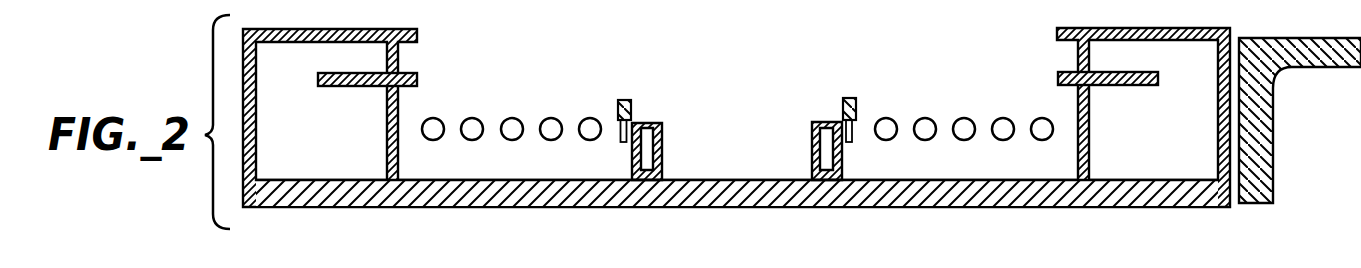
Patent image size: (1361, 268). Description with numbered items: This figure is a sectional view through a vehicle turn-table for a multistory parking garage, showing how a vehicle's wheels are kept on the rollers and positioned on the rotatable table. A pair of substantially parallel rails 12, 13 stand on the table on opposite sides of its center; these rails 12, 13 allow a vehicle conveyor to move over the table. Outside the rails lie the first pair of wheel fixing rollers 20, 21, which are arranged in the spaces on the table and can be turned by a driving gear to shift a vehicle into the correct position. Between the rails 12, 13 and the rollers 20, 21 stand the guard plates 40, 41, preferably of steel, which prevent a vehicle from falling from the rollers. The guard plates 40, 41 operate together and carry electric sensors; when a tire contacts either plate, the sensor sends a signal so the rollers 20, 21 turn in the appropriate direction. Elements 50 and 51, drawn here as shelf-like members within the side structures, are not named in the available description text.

The rail 12 is at (812, 126).
The rail 13 is at (662, 128).
The wheel fixing roller 20 is at (925, 107).
The wheel fixing roller 21 is at (551, 107).
The guard plate 40 is at (843, 99).
The guard plate 41 is at (631, 98).
The shelf 50 is at (1125, 87).
The shelf 51 is at (343, 88).